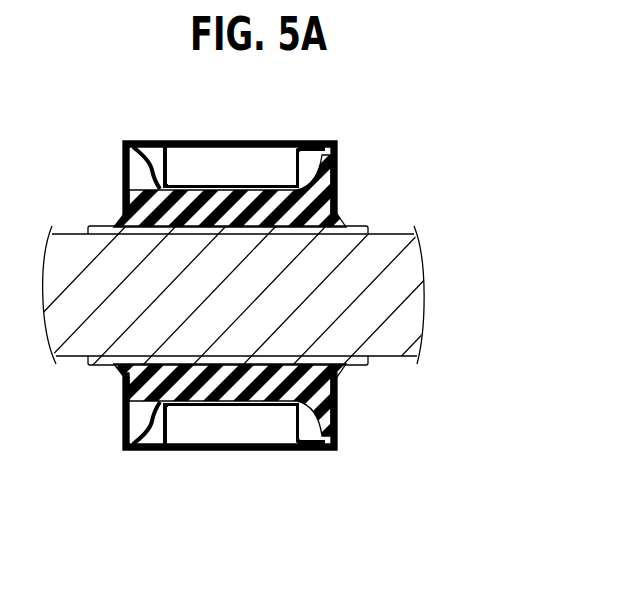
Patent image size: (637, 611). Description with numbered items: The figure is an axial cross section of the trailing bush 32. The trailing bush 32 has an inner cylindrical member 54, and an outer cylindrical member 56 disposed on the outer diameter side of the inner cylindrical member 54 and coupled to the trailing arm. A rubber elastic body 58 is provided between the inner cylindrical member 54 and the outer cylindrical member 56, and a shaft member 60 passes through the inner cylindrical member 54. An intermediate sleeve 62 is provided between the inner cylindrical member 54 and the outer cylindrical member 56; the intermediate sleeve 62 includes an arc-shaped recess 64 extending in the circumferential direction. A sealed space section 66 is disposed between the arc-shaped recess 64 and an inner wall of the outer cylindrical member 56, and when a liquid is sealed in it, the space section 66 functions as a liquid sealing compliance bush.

The trailing bush 32 is at (287, 296).
The inner cylindrical member 54 is at (380, 228).
The outer cylindrical member 56 is at (330, 459).
The rubber elastic body 58 is at (315, 385).
The shaft member 60 is at (397, 283).
The intermediate sleeve 62 is at (309, 438).
The arc-shaped recess 64 is at (174, 430).
The space section 66 is at (237, 157).